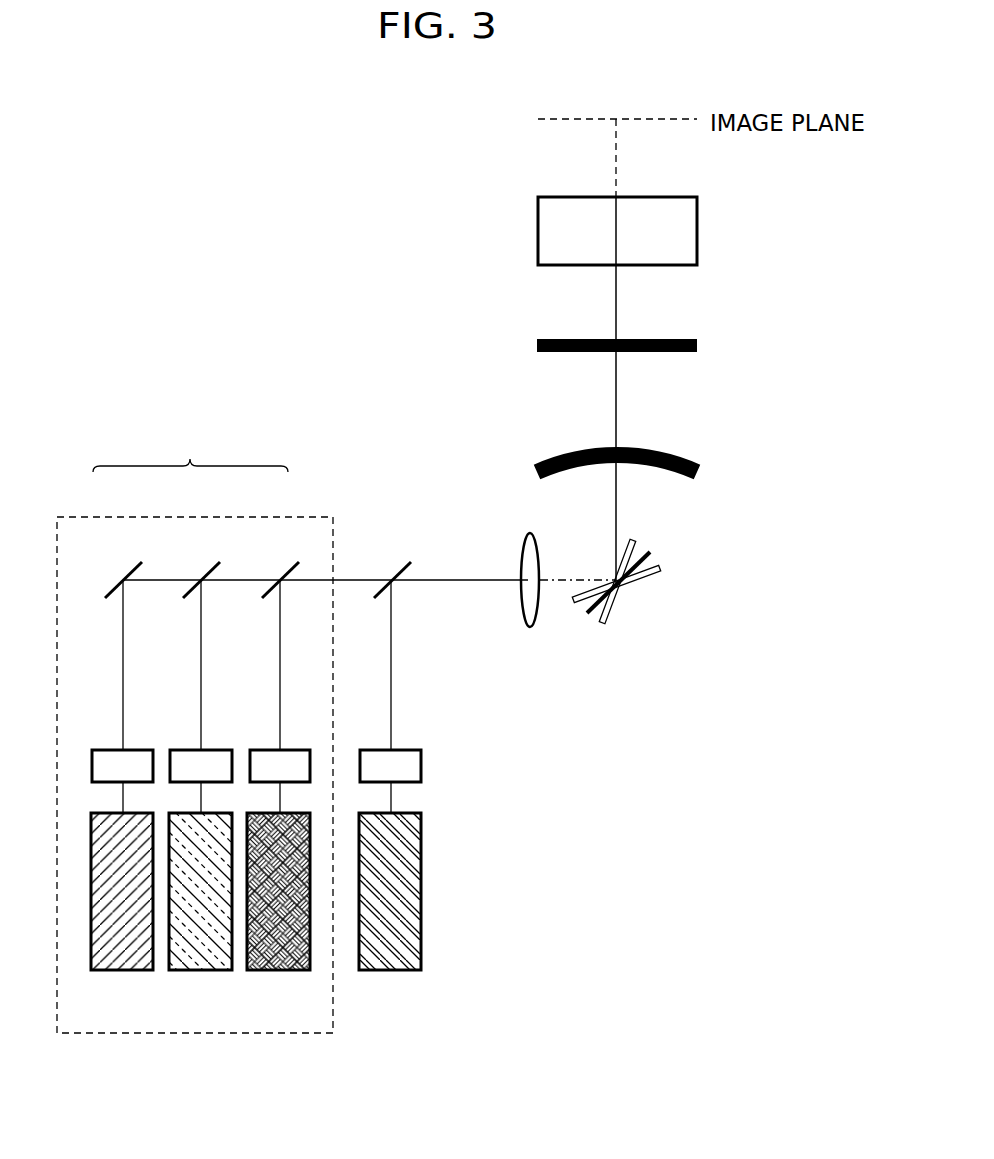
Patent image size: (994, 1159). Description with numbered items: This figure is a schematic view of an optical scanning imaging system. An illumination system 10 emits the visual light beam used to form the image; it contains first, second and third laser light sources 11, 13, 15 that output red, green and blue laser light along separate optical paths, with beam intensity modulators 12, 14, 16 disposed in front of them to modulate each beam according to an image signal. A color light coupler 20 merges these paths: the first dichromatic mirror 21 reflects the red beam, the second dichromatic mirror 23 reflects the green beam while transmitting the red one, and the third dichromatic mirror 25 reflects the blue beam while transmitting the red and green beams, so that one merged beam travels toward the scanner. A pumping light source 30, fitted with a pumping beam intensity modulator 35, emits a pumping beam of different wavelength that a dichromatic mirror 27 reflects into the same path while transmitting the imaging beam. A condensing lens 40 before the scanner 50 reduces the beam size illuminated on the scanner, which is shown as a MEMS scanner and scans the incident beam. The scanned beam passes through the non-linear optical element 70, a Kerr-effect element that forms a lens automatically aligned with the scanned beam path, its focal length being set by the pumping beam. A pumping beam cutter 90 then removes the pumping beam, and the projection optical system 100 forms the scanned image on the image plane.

The illumination system 10 is at (104, 1035).
The first laser light source 11 is at (126, 962).
The beam intensity modulator 12 is at (138, 758).
The second laser light source 13 is at (202, 962).
The beam intensity modulator 14 is at (216, 758).
The third laser light source 15 is at (283, 962).
The beam intensity modulator 16 is at (296, 758).
The color light coupler 20 is at (190, 453).
The first dichromatic mirror 21 is at (128, 572).
The second dichromatic mirror 23 is at (210, 572).
The third dichromatic mirror 25 is at (290, 572).
The dichromatic mirror 27 is at (400, 572).
The pumping light source 30 is at (400, 962).
The pumping beam intensity modulator 35 is at (405, 758).
The condensing lens 40 is at (539, 560).
The scanner 50 is at (636, 546).
The non-linear optical element 70 is at (671, 456).
The pumping beam cutter 90 is at (653, 338).
The projection optical system 100 is at (677, 197).